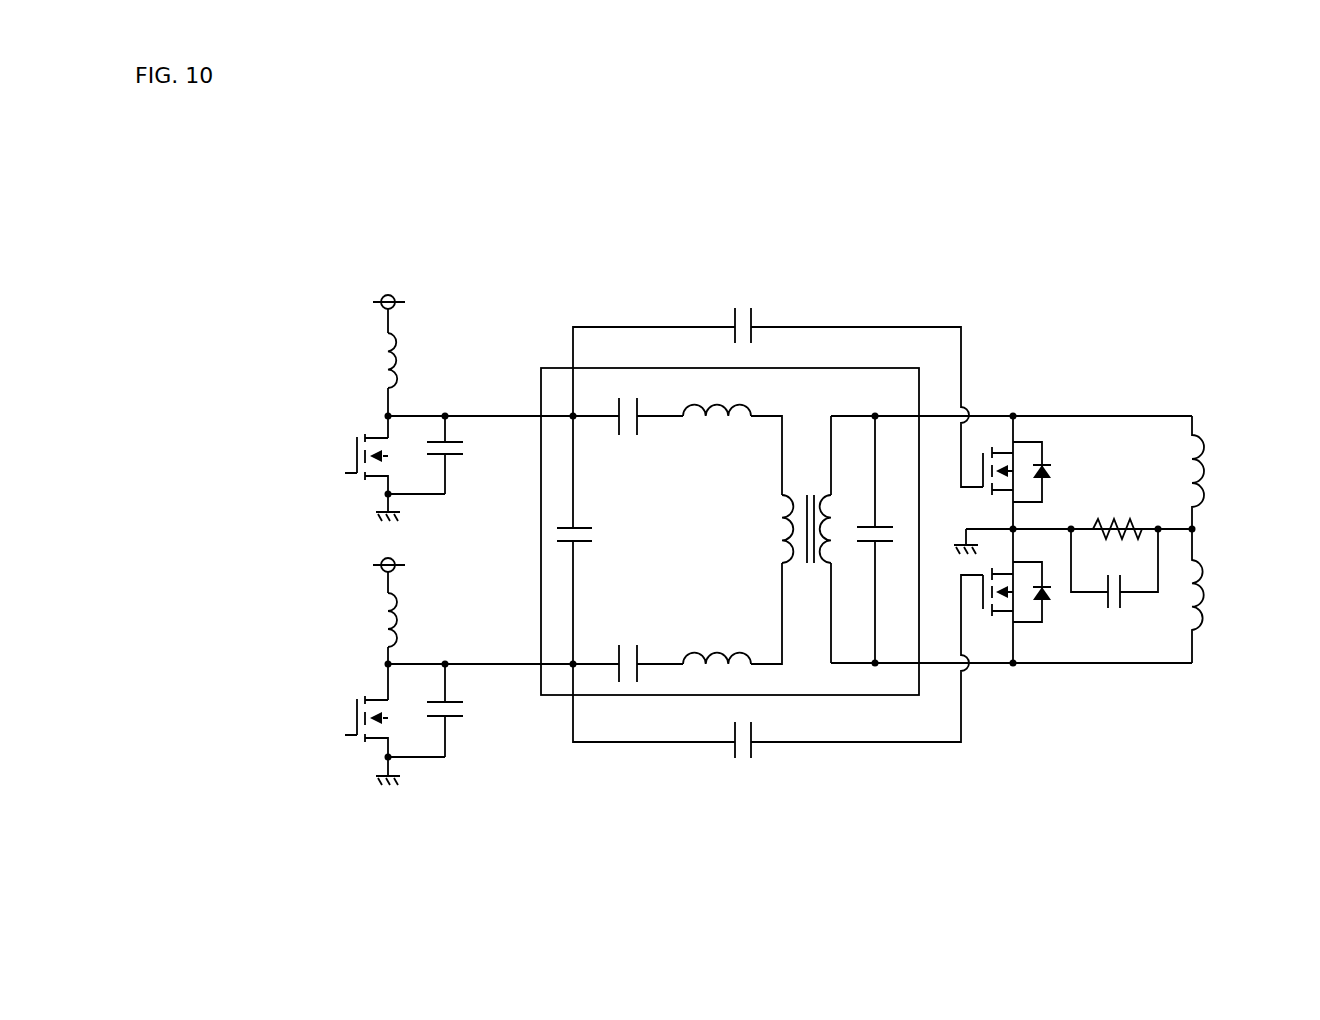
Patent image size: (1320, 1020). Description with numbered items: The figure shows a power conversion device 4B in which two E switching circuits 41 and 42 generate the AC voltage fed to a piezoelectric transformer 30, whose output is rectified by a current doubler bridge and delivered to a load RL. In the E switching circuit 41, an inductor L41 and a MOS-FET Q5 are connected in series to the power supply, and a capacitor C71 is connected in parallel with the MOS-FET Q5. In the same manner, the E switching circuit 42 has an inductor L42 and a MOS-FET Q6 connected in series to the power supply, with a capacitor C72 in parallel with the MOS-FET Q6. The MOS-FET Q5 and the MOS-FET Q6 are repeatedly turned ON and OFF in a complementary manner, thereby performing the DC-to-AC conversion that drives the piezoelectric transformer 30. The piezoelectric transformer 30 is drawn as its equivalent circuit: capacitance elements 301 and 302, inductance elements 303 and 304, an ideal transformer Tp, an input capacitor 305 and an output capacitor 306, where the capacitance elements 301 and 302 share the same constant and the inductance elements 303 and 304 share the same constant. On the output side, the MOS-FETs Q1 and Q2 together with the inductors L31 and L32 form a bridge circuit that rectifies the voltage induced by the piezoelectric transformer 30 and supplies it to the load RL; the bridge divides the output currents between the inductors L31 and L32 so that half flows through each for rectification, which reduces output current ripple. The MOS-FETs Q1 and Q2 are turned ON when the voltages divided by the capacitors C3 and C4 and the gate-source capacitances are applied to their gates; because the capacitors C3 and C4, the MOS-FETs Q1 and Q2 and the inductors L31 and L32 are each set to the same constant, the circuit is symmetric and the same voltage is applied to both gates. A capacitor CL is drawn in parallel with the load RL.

The power conversion device 4B is at (526, 226).
The E switching circuit 41 is at (332, 395).
The E switching circuit 42 is at (332, 611).
The piezoelectric transformer 30 is at (553, 368).
The capacitance element 301 is at (648, 420).
The capacitance element 302 is at (648, 659).
The inductance element 303 is at (717, 423).
The inductance element 304 is at (717, 641).
The input capacitor 305 is at (585, 540).
The output capacitor 306 is at (887, 539).
The ideal transformer Tp is at (806, 508).
The capacitor C3 is at (778, 393).
The capacitor C4 is at (778, 670).
The inductor L41 is at (413, 360).
The inductor L42 is at (413, 620).
The MOS-FET Q5 is at (366, 442).
The MOS-FET Q6 is at (366, 705).
The capacitor C71 is at (457, 455).
The capacitor C72 is at (457, 710).
The MOS-FET Q1 is at (1014, 481).
The MOS-FET Q2 is at (1014, 602).
The load RL is at (1114, 515).
The load capacitor CL is at (1114, 581).
The inductor L31 is at (1223, 472).
The inductor L32 is at (1223, 596).